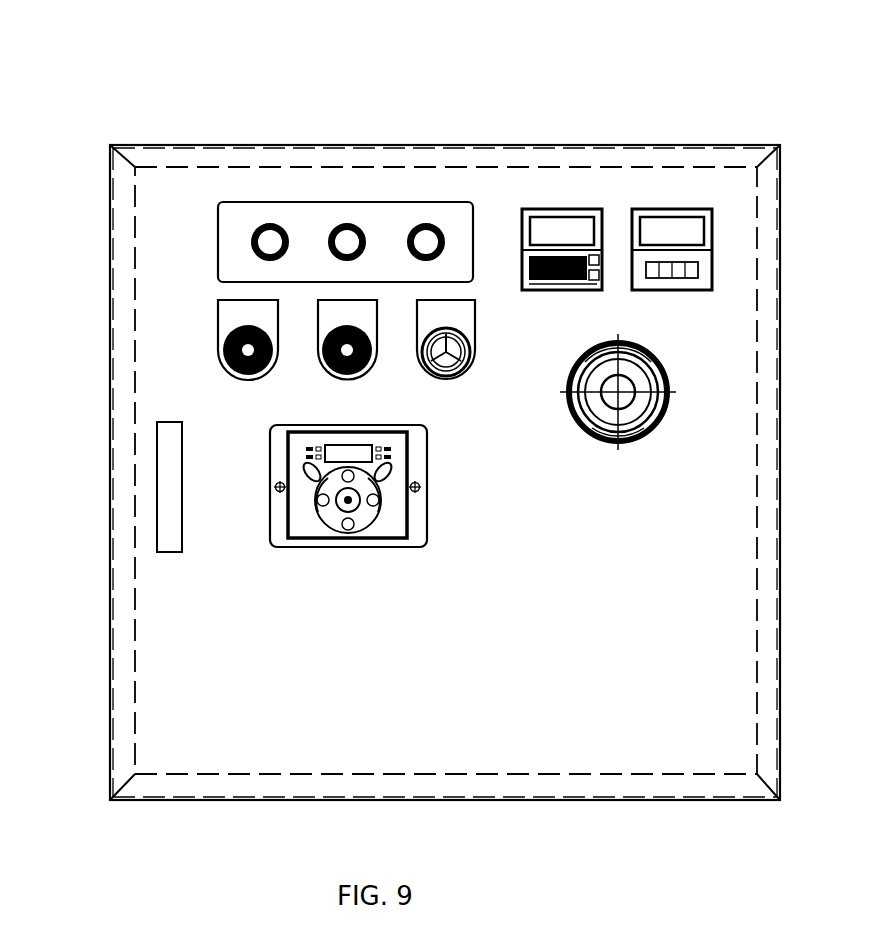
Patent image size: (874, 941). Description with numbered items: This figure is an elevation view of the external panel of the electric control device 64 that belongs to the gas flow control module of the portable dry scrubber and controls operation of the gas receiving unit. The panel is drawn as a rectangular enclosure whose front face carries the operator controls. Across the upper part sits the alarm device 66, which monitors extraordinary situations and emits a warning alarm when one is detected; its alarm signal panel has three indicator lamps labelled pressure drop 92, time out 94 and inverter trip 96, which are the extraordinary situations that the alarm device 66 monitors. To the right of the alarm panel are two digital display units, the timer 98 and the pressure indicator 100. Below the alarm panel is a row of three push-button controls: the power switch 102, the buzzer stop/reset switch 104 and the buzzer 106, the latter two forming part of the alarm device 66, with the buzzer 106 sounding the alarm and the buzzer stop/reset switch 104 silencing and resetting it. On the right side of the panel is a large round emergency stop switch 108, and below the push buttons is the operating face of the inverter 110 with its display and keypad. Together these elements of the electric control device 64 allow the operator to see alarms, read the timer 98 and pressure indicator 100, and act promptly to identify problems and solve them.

The electric control device 64 is at (788, 73).
The alarm device 66 is at (218, 235).
The pressure drop 92 is at (270, 224).
The time out 94 is at (347, 224).
The inverter trip 96 is at (427, 224).
The timer 98 is at (562, 222).
The pressure indicator 100 is at (672, 222).
The power switch 102 is at (225, 352).
The buzzer stop/reset switch 104 is at (326, 345).
The buzzer 106 is at (421, 356).
The emergency stop switch 108 is at (682, 392).
The inverter 110 is at (268, 508).